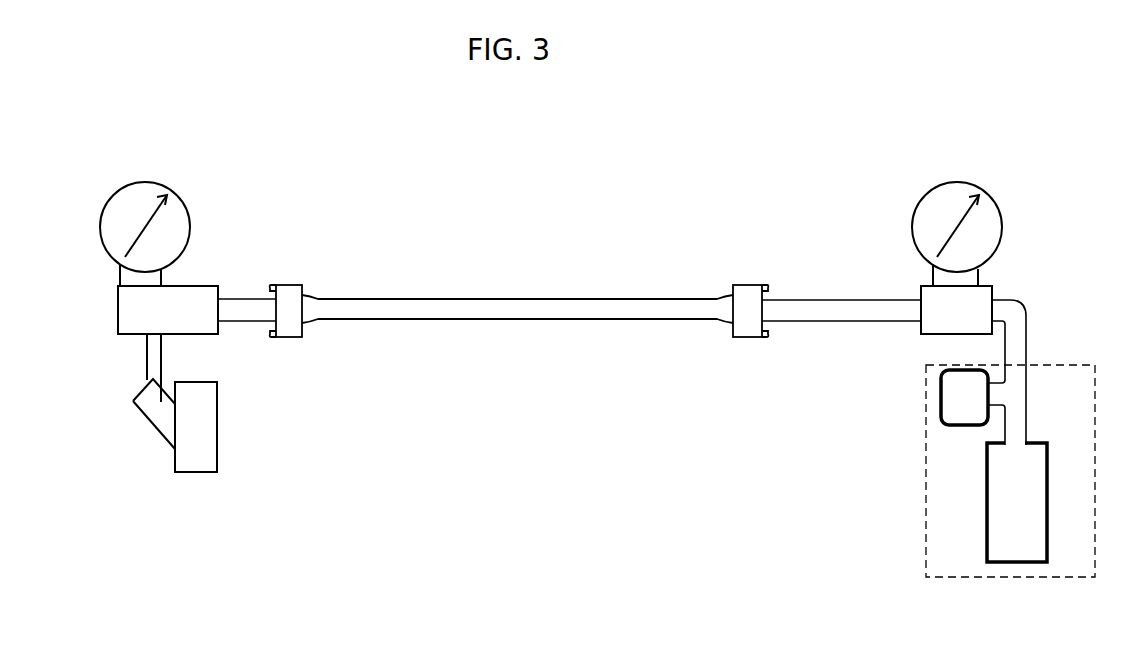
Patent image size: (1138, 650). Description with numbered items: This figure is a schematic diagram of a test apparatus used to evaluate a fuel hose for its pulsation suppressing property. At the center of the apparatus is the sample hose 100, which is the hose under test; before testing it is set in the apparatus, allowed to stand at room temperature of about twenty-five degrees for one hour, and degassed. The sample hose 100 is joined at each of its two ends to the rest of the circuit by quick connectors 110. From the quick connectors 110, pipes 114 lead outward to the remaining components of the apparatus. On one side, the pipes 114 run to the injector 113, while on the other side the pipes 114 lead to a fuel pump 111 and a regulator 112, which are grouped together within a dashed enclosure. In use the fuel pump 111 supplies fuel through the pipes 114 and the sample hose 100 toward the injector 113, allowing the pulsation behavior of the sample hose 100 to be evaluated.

The sample hose 100 is at (561, 299).
The quick connectors 110 is at (290, 285).
The fuel pump 111 is at (1017, 563).
The regulator 112 is at (940, 398).
The injector 113 is at (191, 472).
The pipes 114 is at (243, 322).